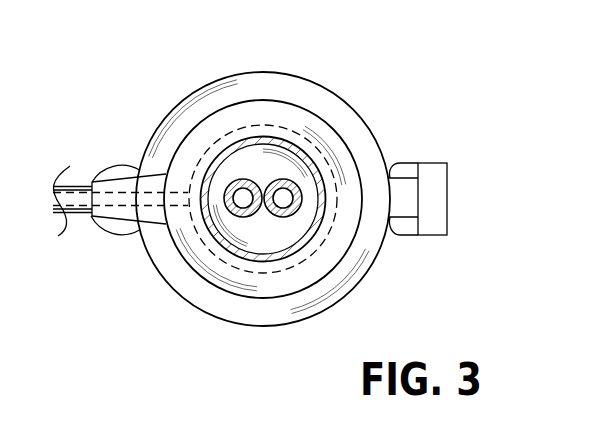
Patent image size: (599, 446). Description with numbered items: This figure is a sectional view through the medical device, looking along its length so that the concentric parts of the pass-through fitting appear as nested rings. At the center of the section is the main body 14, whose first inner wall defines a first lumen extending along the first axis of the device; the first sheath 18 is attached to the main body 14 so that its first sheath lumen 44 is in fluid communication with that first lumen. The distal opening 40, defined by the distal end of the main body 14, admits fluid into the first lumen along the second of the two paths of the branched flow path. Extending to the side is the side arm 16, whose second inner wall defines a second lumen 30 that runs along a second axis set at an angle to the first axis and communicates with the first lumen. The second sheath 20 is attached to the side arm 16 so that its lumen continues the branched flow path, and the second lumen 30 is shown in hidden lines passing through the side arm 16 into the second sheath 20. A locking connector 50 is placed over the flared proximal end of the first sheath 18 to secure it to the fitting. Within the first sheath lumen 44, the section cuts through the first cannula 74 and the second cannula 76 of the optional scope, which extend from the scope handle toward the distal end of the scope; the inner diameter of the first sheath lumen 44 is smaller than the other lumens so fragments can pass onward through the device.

The main body 14 is at (368, 128).
The side arm 16 is at (118, 166).
The first sheath 18 is at (313, 240).
The second sheath 20 is at (77, 186).
The second lumen 30 is at (116, 202).
The distal opening 40 is at (220, 263).
The first sheath lumen 44 is at (288, 235).
The locking connector 50 is at (174, 247).
The first cannula 74 is at (245, 179).
The second cannula 76 is at (282, 179).